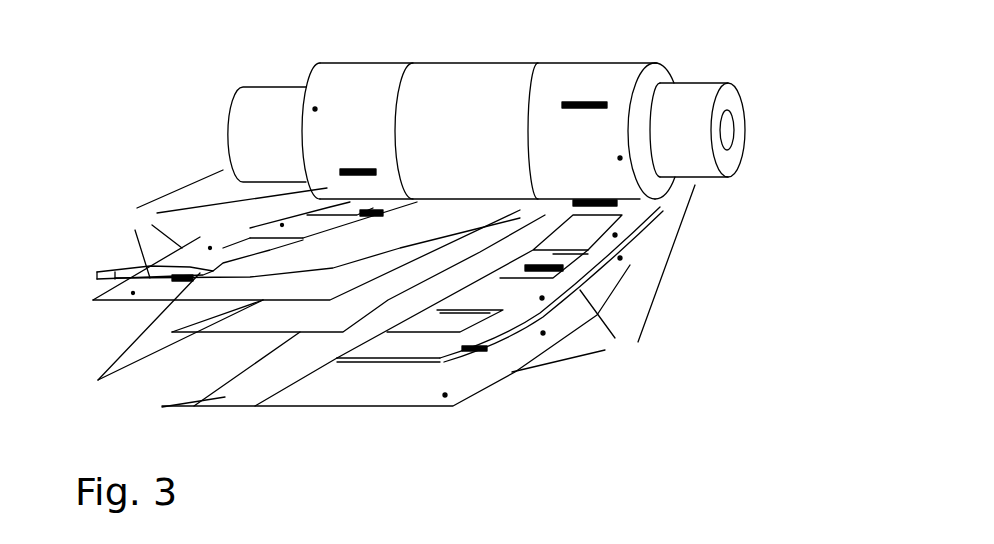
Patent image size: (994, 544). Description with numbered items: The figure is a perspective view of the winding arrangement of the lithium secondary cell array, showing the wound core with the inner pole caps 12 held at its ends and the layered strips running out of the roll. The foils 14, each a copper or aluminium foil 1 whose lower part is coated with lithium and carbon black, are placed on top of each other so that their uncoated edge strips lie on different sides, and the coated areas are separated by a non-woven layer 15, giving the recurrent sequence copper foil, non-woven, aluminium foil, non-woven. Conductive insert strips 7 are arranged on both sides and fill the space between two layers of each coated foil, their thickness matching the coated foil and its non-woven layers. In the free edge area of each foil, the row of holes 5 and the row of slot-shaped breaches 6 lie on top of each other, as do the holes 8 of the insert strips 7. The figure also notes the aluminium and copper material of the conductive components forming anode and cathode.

The foil 1 is at (358, 82).
The holes 5 is at (315, 108).
The slot-shaped breaches 6 is at (342, 171).
The insert strips 7 is at (106, 271).
The holes 8 is at (447, 345).
The inner pole caps 12 is at (247, 103).
The foils 14 is at (498, 88).
The non-woven layer 15 is at (98, 380).